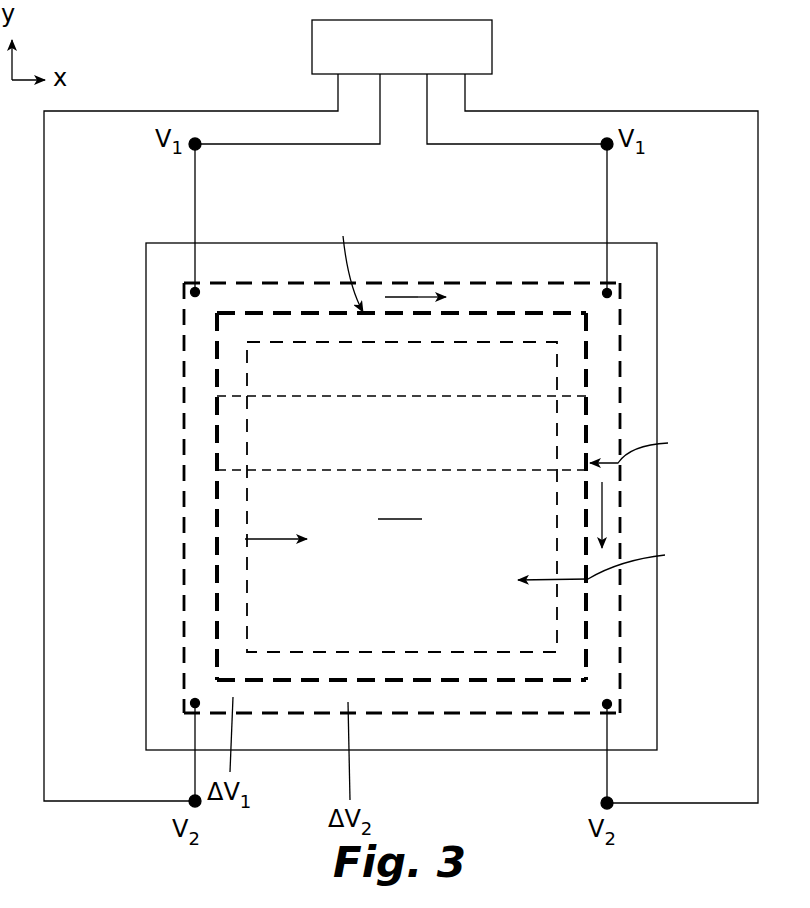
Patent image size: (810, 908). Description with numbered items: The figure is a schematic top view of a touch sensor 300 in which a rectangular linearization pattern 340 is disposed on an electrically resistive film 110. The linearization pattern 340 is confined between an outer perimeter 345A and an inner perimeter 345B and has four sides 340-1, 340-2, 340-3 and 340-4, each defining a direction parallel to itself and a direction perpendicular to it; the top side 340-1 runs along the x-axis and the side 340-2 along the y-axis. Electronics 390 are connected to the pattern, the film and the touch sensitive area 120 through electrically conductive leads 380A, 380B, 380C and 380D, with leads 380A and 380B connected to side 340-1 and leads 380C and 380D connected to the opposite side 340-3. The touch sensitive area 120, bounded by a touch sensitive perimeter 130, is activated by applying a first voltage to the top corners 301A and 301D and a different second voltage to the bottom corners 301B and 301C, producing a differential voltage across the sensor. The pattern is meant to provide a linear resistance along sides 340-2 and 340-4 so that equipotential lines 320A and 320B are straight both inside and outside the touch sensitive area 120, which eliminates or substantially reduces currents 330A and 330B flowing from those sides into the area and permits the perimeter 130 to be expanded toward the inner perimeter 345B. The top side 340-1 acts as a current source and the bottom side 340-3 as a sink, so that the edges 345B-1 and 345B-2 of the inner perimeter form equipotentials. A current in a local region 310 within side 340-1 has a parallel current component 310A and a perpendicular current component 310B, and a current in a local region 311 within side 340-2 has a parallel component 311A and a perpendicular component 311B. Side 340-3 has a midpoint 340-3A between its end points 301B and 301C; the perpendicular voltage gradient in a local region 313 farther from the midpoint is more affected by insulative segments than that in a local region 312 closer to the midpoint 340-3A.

The touch sensor 300 is at (401, 412).
The electronics 390 is at (492, 45).
The lead 380A is at (498, 146).
The lead 380B is at (287, 146).
The lead 380C is at (45, 208).
The lead 380D is at (758, 211).
The electrically resistive film 110 is at (165, 553).
The touch sensitive area 120 is at (402, 507).
The touch sensitive perimeter 130 is at (558, 362).
The linearization pattern 340 is at (402, 525).
The side 340-1 is at (252, 300).
The side 340-2 is at (602, 395).
The side 340-3 is at (288, 698).
The midpoint 340-3A is at (395, 698).
The side 340-4 is at (197, 371).
The outer perimeter 345A is at (618, 626).
The inner perimeter 345B is at (583, 662).
The edge 345B-1 is at (543, 305).
The edge 345B-2 is at (522, 682).
The top corner 301A is at (612, 298).
The bottom corner 301B is at (610, 700).
The bottom corner 301C is at (192, 688).
The top corner 301D is at (192, 302).
The local region 310 is at (418, 236).
The parallel current component 310A is at (418, 297).
The perpendicular current component 310B is at (346, 261).
The local region 311 is at (668, 505).
The parallel current component 311A is at (602, 510).
The perpendicular current component 311B is at (662, 445).
The local region 312 is at (365, 700).
The local region 313 is at (248, 697).
The equipotential line 320A is at (268, 398).
The equipotential line 320B is at (268, 472).
The current 330A is at (624, 560).
The current 330B is at (262, 539).